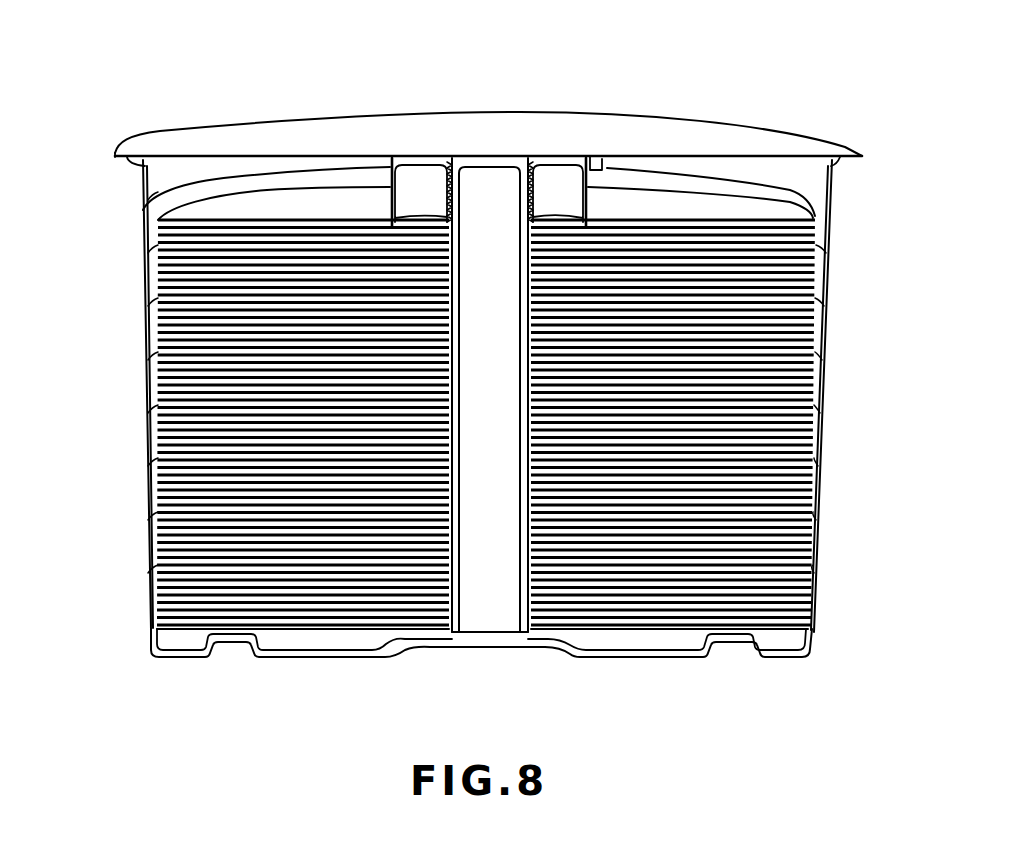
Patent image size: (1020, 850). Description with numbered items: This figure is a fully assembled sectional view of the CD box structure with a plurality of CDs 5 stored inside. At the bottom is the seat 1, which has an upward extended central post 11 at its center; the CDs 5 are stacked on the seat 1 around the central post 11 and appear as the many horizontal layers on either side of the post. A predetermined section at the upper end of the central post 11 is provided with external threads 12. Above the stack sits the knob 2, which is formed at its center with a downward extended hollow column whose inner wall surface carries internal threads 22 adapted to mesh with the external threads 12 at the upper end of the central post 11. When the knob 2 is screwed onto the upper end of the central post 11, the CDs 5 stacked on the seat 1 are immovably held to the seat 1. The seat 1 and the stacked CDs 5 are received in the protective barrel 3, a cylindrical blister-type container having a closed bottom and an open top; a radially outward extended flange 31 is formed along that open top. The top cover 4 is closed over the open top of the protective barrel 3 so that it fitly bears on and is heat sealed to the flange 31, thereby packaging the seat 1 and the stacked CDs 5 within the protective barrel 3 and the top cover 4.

The seat 1 is at (780, 653).
The knob 2 is at (563, 162).
The protective barrel 3 is at (146, 332).
The top cover 4 is at (688, 136).
The CDs 5 is at (782, 242).
The central post 11 is at (487, 190).
The external threads 12 is at (446, 192).
The internal threads 22 is at (528, 190).
The flange 31 is at (122, 157).